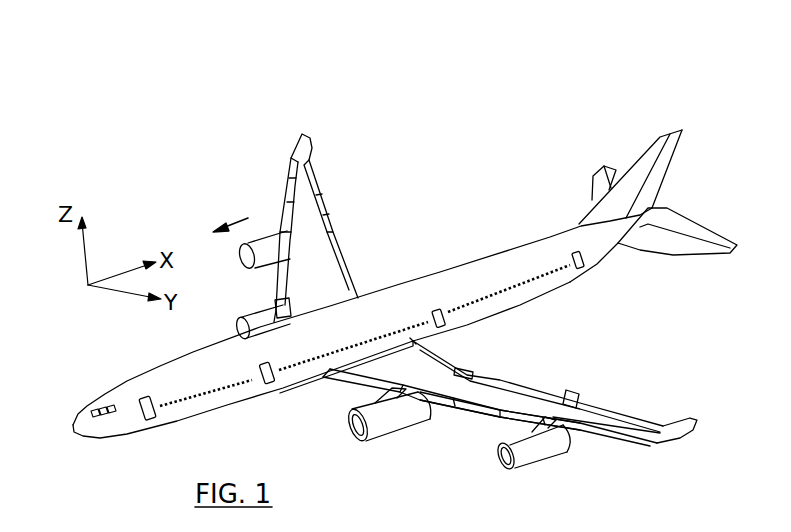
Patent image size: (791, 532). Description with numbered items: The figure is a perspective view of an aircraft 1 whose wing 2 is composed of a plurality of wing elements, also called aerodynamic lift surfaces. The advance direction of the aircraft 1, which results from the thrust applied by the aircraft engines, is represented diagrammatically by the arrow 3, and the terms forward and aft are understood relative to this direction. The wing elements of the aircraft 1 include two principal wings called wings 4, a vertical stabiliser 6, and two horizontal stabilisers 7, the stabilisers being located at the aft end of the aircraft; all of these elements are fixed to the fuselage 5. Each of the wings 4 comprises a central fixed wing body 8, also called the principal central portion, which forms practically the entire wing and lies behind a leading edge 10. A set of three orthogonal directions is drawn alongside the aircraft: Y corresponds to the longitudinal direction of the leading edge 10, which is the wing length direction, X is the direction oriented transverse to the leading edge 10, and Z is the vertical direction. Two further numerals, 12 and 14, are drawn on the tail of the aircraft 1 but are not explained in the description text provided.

The aircraft 1 is at (248, 94).
The wing 2 is at (485, 320).
The arrow 3 is at (230, 216).
The wings 4 is at (488, 373).
The fuselage 5 is at (509, 259).
The vertical stabiliser 6 is at (615, 250).
The horizontal stabilisers 7 is at (580, 196).
The central fixed wing body 8 is at (633, 427).
The leading edge 10 is at (483, 403).
The vertical fin 12 is at (632, 160).
The rudder 14 is at (645, 172).